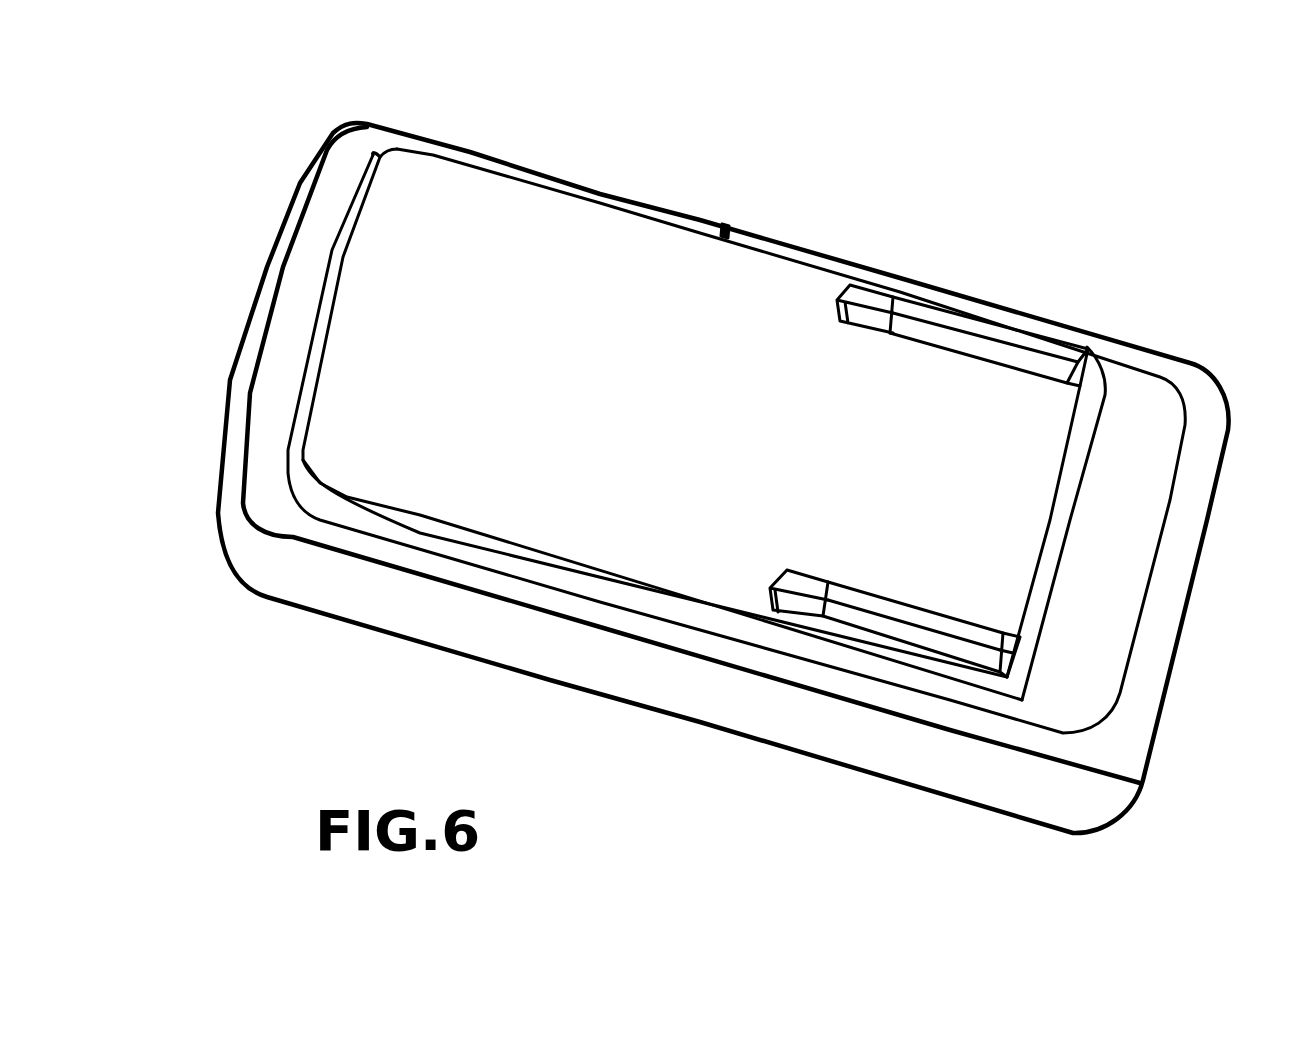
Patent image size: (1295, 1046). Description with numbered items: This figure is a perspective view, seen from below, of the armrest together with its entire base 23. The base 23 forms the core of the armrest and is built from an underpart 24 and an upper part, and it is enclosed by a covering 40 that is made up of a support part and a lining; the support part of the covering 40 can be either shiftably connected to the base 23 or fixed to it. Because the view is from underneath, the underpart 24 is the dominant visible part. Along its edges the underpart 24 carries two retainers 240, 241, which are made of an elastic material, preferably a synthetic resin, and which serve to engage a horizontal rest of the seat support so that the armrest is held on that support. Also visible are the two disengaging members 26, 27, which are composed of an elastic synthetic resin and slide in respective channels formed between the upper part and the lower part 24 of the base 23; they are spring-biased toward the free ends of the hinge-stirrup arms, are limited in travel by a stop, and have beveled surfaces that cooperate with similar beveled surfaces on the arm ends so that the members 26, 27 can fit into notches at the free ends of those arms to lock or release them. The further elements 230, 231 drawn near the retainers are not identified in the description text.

The base 23 is at (727, 222).
The underpart 24 is at (495, 210).
The disengaging member 26 is at (878, 305).
The disengaging member 27 is at (803, 603).
The covering 40 is at (282, 585).
The upper guide rail 230 is at (980, 357).
The lower guide rail 231 is at (910, 635).
The retainer 240 is at (1085, 360).
The retainer 241 is at (1007, 655).